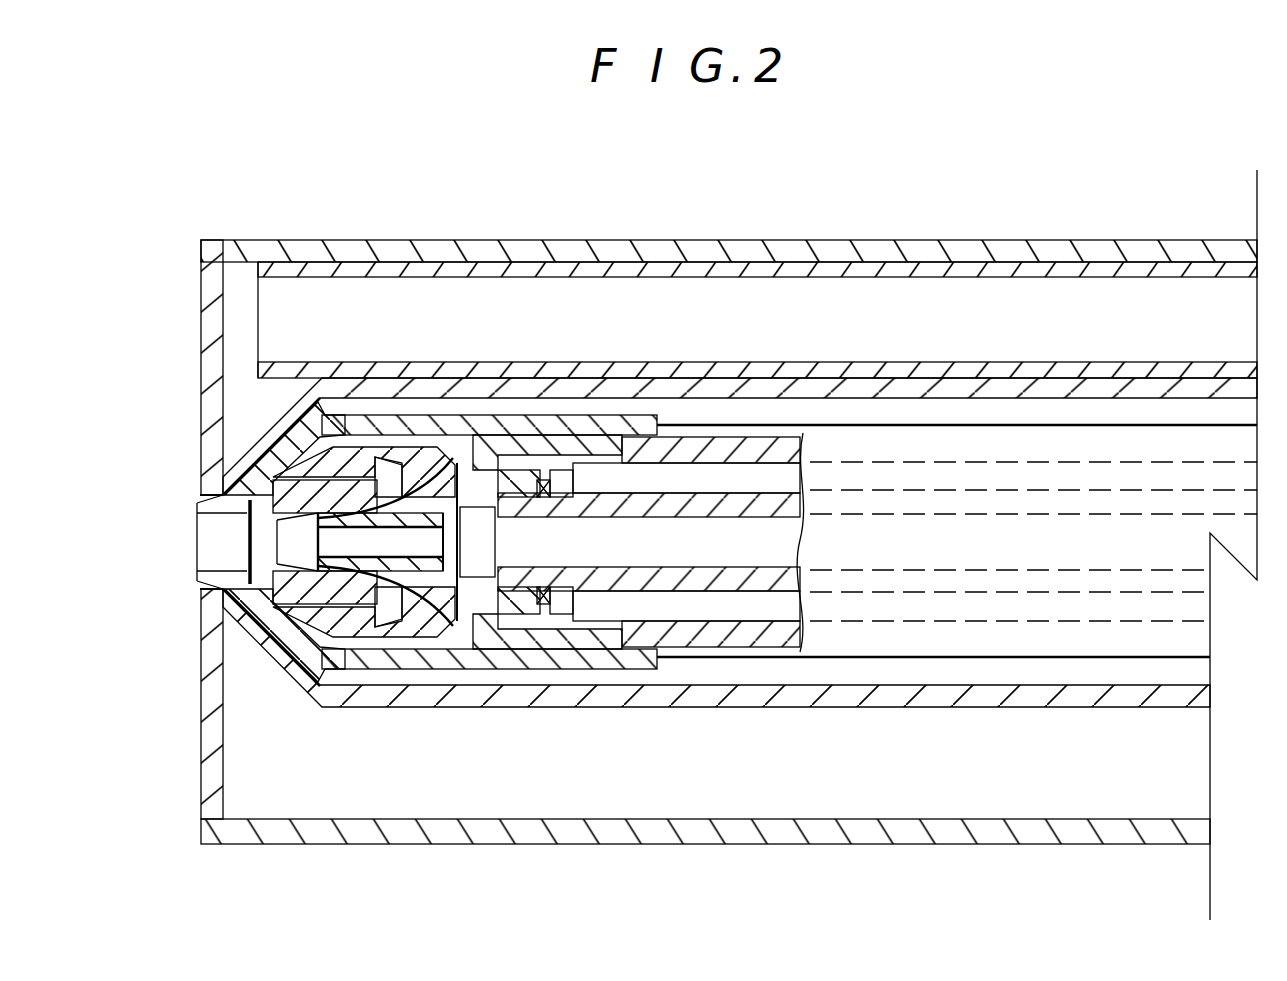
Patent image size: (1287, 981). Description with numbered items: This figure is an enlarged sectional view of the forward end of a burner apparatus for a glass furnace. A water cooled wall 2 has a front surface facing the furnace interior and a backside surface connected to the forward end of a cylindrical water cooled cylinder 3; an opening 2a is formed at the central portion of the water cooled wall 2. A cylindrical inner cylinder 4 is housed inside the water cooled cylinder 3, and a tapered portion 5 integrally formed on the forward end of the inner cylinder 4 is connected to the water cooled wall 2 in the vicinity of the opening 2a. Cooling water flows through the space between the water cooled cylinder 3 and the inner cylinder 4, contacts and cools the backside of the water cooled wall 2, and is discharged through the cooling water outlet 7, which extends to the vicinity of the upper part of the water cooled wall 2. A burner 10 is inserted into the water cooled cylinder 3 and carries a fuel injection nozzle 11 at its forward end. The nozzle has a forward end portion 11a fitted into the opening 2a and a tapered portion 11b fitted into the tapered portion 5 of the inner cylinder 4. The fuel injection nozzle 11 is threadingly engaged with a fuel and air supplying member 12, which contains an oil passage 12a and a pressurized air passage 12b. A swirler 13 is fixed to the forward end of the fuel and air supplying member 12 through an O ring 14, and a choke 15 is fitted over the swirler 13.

The water cooled wall 2 is at (207, 332).
The opening 2a is at (212, 550).
The water cooled cylinder 3 is at (725, 246).
The inner cylinder 4 is at (817, 385).
The tapered portion 5 is at (262, 437).
The cooling water outlet 7 is at (955, 272).
The burner 10 is at (987, 426).
The fuel injection nozzle 11 is at (348, 415).
The forward end portion 11a is at (208, 505).
The tapered portion 11b is at (285, 443).
The fuel and air supplying member 12 is at (755, 452).
The oil passage 12a is at (585, 538).
The pressurized air passage 12b is at (665, 478).
The swirler 13 is at (468, 467).
The O ring 14 is at (546, 482).
The choke 15 is at (293, 592).